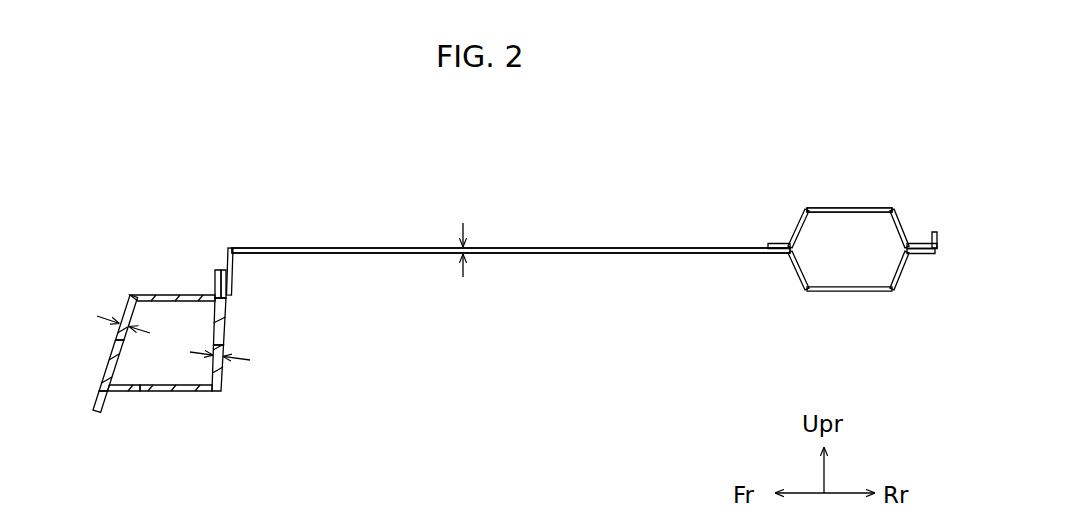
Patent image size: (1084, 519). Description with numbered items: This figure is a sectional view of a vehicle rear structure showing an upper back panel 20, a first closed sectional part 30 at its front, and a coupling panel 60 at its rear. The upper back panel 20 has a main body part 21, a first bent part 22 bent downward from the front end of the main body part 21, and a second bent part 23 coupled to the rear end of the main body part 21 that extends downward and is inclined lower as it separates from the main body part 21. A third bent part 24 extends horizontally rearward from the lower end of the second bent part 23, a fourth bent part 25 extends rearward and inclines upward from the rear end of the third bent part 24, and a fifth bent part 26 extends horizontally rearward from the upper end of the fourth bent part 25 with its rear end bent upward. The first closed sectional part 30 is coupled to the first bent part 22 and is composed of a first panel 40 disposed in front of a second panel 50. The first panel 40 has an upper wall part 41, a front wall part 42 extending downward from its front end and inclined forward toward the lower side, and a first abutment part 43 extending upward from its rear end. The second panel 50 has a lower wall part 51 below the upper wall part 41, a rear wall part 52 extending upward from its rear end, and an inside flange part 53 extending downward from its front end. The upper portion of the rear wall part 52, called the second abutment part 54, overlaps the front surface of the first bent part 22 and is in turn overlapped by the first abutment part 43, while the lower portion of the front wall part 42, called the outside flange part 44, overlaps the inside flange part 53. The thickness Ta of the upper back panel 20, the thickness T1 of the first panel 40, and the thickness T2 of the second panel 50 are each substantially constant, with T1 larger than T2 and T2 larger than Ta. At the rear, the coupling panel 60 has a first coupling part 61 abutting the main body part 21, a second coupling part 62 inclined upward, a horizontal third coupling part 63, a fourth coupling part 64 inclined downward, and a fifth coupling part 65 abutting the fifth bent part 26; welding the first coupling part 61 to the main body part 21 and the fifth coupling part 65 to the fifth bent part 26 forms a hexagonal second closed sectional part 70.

The upper back panel 20 is at (522, 185).
The main body part 21 is at (560, 248).
The first bent part 22 is at (233, 278).
The second bent part 23 is at (797, 270).
The third bent part 24 is at (855, 290).
The fourth bent part 25 is at (900, 270).
The fifth bent part 26 is at (932, 256).
The first closed sectional part 30 is at (160, 183).
The first panel 40 is at (110, 340).
The upper wall part 41 is at (165, 296).
The front wall part 42 is at (106, 367).
The first abutment part 43 is at (212, 278).
The outside flange part 44 is at (95, 395).
The second panel 50 is at (224, 330).
The lower wall part 51 is at (163, 392).
The rear wall part 52 is at (222, 378).
The inside flange part 53 is at (108, 396).
The second abutment part 54 is at (222, 269).
The coupling panel 60 is at (862, 208).
The first coupling part 61 is at (773, 246).
The second coupling part 62 is at (796, 228).
The third coupling part 63 is at (830, 208).
The fourth coupling part 64 is at (900, 227).
The fifth coupling part 65 is at (934, 233).
The second closed sectional part 70 is at (850, 157).
The thickness of the upper back panel Ta is at (462, 247).
The thickness of the first panel T1 is at (117, 318).
The thickness of the second panel T2 is at (230, 356).